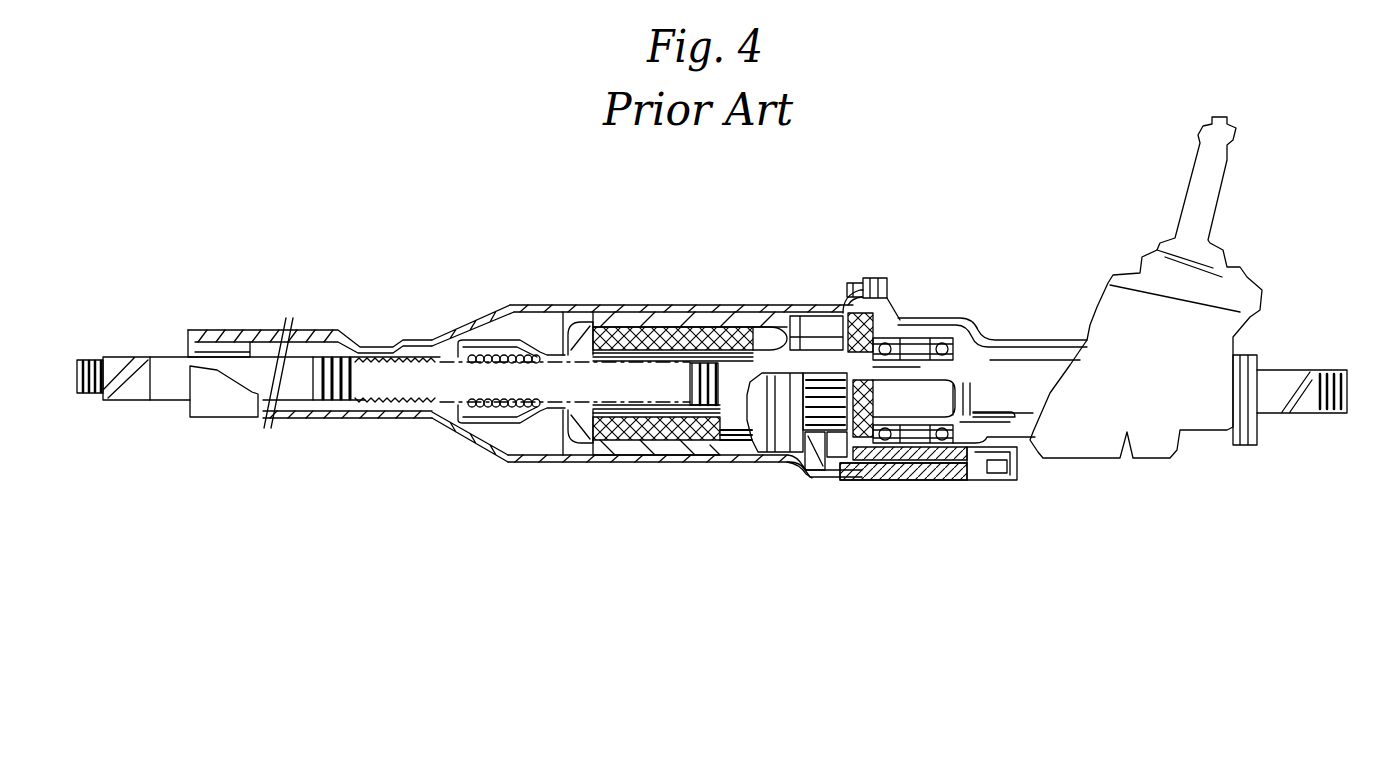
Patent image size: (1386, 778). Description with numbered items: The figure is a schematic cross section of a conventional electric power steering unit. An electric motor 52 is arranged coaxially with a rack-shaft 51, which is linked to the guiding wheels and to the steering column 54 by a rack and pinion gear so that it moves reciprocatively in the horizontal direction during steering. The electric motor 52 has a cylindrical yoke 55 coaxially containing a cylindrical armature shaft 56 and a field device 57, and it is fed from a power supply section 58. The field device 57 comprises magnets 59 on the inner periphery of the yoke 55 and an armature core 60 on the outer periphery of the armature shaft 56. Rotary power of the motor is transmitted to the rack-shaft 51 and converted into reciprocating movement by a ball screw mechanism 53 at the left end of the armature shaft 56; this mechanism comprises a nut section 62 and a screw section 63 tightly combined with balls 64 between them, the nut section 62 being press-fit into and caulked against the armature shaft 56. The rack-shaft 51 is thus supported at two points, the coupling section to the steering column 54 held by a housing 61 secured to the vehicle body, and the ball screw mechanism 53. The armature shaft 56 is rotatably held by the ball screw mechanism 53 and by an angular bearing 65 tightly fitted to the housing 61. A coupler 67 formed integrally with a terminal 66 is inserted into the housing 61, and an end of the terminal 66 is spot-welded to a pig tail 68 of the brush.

The rack-shaft 51 is at (522, 385).
The electric motor 52 is at (686, 302).
The ball screw mechanism 53 is at (455, 420).
The steering column 54 is at (1187, 172).
The cylindrical yoke 55 is at (511, 301).
The cylindrical armature shaft 56 is at (606, 442).
The field device 57 is at (590, 446).
The power supply section 58 is at (892, 486).
The magnets 59 is at (590, 309).
The armature core 60 is at (667, 440).
The housing 61 is at (917, 322).
The nut section 62 is at (452, 322).
The screw section 63 is at (398, 405).
The balls 64 is at (484, 410).
The angular bearing 65 is at (893, 335).
The terminal 66 is at (823, 467).
The coupler 67 is at (985, 481).
The pig tail 68 is at (793, 468).